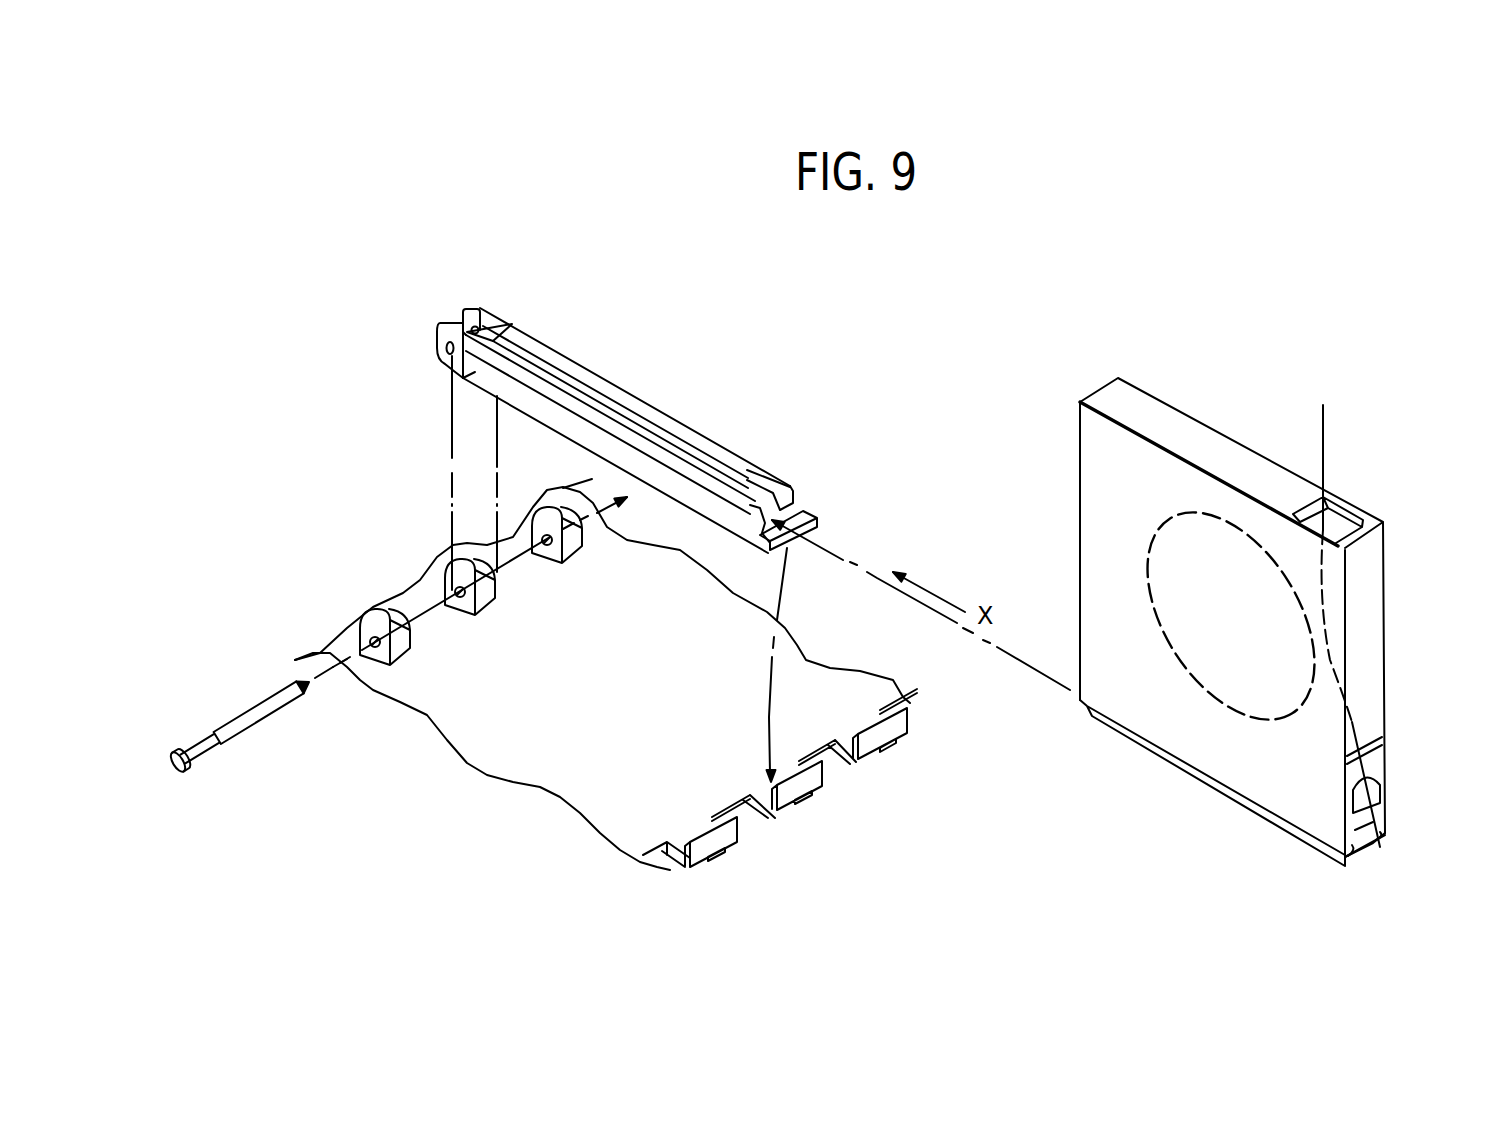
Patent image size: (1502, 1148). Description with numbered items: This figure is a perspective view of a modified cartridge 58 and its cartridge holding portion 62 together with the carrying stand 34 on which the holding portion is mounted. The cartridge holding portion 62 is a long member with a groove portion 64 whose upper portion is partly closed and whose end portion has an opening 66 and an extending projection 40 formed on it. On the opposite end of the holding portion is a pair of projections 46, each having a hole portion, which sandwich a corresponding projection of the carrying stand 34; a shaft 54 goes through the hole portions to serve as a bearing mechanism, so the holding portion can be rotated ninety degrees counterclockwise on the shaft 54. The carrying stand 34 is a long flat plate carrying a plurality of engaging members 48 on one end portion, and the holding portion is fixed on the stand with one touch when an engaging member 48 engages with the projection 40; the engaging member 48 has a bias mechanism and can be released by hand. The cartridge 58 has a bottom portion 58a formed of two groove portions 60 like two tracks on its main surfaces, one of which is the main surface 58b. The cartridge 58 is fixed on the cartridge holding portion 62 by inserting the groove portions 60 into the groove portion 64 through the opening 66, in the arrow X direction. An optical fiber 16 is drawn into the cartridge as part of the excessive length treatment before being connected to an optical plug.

The optical fiber 16 is at (1325, 442).
The carrying stand 34 is at (407, 598).
The projection 40 is at (639, 417).
The pair of projections 46 is at (447, 321).
The engaging member 48 is at (743, 836).
The shaft 54 is at (258, 722).
The cartridge 58 is at (1244, 612).
The bottom portion 58a is at (1368, 868).
The main surface 58b is at (1263, 793).
The groove portions 60 is at (1345, 862).
The cartridge holding portion 62 is at (487, 373).
The groove portion 64 is at (757, 472).
The opening 66 is at (768, 551).